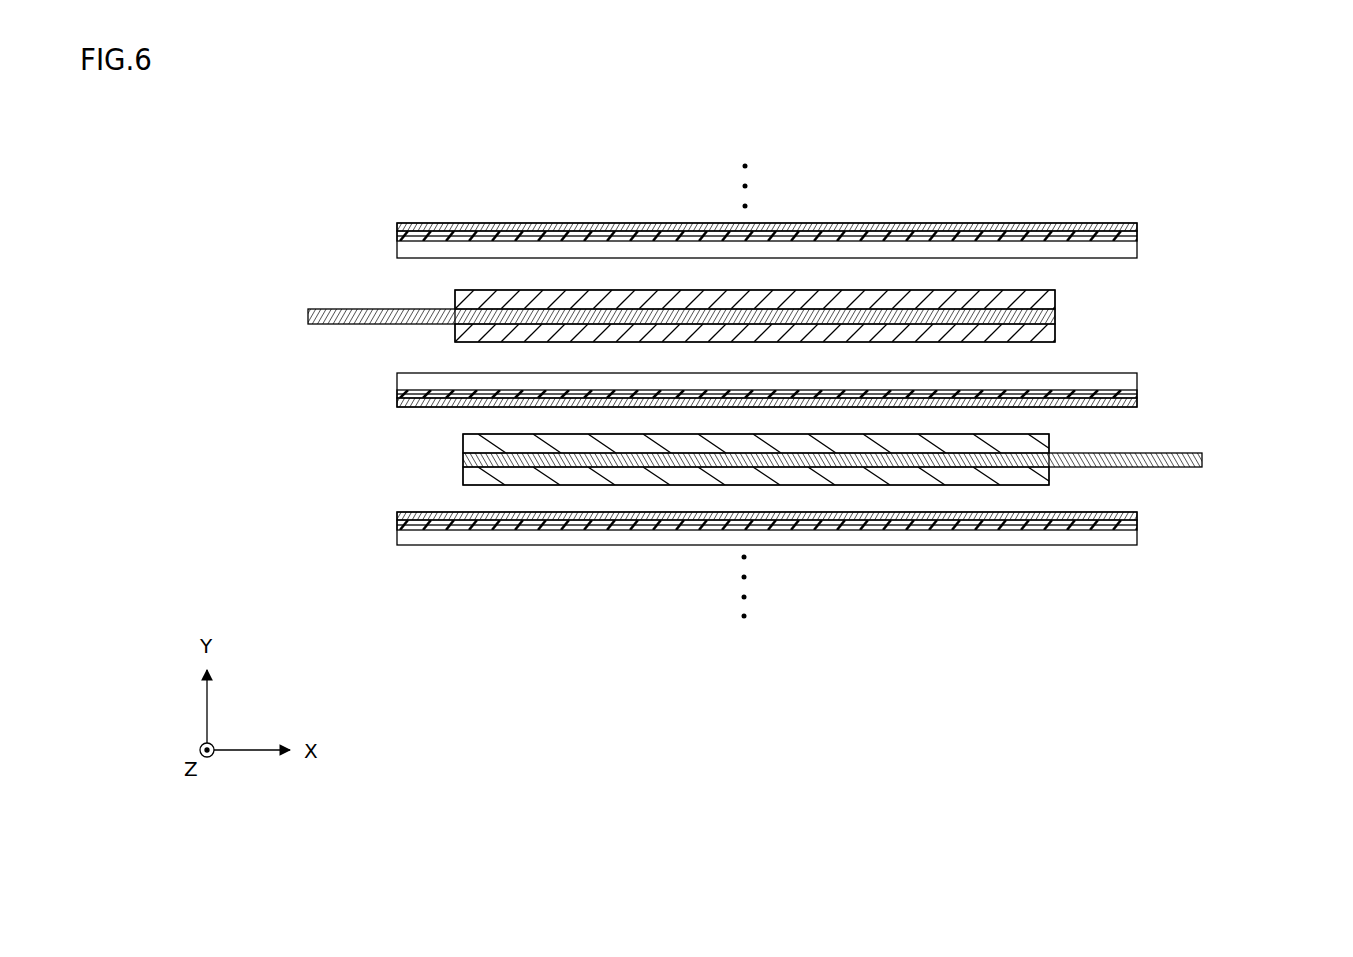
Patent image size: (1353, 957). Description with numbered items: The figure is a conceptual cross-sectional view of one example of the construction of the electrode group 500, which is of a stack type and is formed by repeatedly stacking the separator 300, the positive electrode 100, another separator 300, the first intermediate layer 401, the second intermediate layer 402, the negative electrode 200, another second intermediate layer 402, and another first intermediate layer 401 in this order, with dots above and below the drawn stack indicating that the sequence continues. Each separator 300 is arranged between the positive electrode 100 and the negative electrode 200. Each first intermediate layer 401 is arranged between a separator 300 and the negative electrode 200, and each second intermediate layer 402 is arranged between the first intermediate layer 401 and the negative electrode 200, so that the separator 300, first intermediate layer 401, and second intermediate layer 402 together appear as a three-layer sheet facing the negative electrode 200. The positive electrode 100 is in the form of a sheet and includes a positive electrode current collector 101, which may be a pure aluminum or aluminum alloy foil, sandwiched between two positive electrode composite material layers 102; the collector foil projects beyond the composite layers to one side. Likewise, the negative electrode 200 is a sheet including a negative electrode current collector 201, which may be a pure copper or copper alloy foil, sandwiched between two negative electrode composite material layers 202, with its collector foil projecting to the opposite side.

The electrode group 500 is at (435, 156).
The separator 300 is at (765, 379).
The first intermediate layer 401 is at (1137, 238).
The second intermediate layer 402 is at (1137, 227).
The positive electrode 100 is at (815, 315).
The positive electrode current collector 101 is at (1055, 316).
The positive electrode composite material layer 102 is at (1055, 300).
The negative electrode 200 is at (893, 460).
The negative electrode current collector 201 is at (1202, 460).
The negative electrode composite material layer 202 is at (1049, 443).